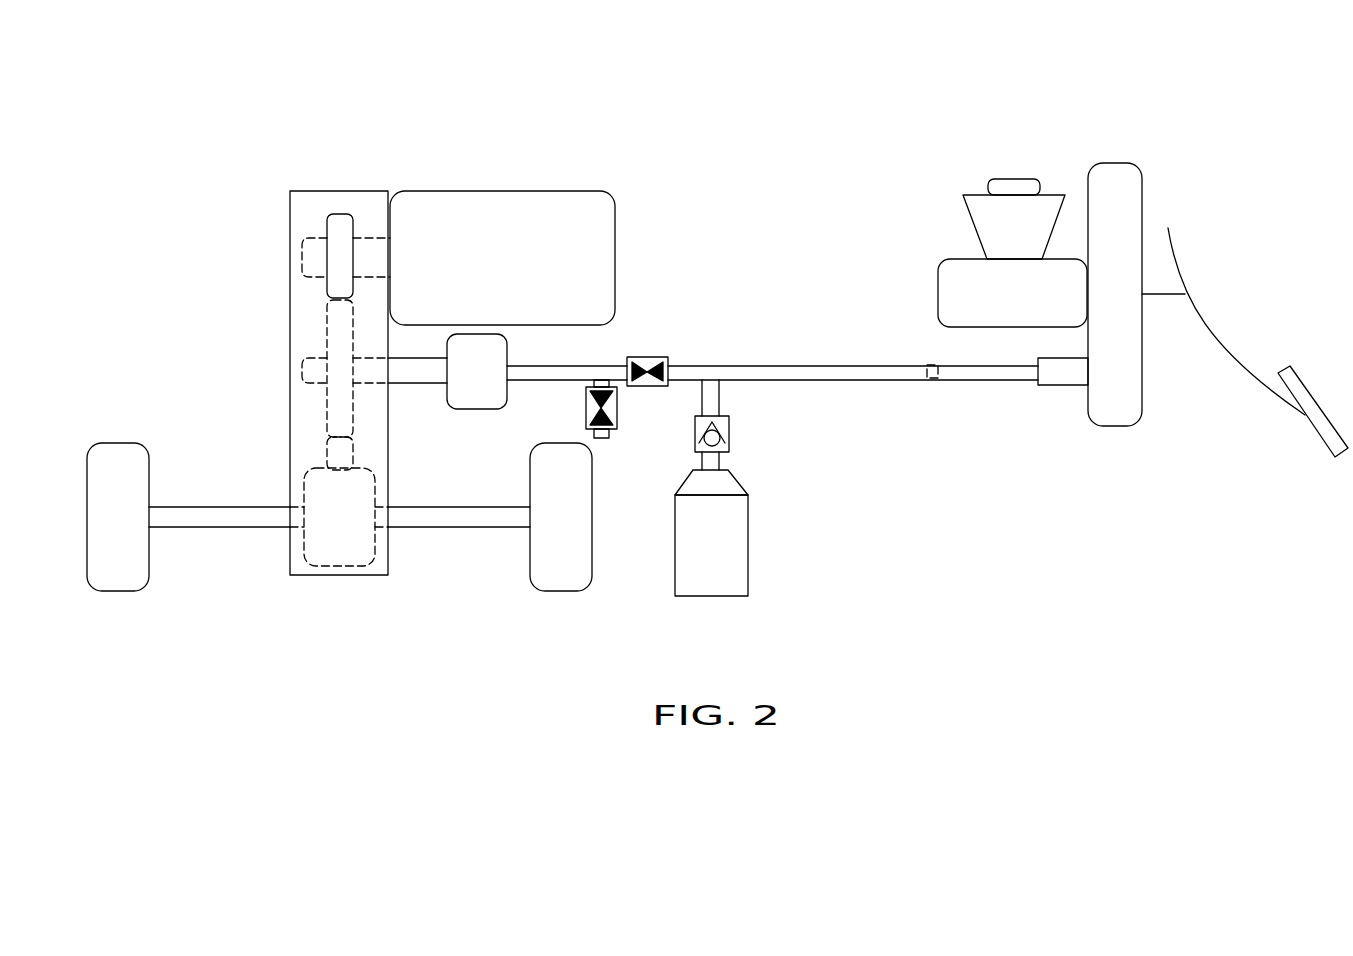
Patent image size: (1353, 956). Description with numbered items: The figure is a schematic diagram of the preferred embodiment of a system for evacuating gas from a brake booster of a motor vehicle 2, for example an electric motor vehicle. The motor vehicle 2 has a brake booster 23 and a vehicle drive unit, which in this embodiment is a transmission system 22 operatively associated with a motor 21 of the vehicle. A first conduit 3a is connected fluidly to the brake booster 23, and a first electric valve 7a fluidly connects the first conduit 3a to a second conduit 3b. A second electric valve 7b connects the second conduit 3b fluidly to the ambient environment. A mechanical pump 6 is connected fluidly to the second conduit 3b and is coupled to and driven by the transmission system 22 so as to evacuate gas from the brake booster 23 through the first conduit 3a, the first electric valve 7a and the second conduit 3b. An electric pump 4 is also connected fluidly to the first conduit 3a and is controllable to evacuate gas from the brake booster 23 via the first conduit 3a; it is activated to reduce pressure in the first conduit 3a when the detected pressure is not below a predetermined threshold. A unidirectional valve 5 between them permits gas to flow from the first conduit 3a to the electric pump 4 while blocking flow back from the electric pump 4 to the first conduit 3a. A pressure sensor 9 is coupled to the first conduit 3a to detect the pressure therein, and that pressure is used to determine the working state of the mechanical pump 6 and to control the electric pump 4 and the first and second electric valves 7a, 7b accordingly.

The motor vehicle 2 is at (252, 148).
The motor 21 is at (507, 203).
The transmission system 22 is at (327, 340).
The brake booster 23 is at (1120, 162).
The first conduit 3a is at (996, 384).
The second conduit 3b is at (528, 385).
The electric pump 4 is at (753, 545).
The unidirectional valve 5 is at (733, 430).
The mechanical pump 6 is at (475, 412).
The first electric valve 7a is at (640, 368).
The second electric valve 7b is at (620, 409).
The pressure sensor 9 is at (920, 365).